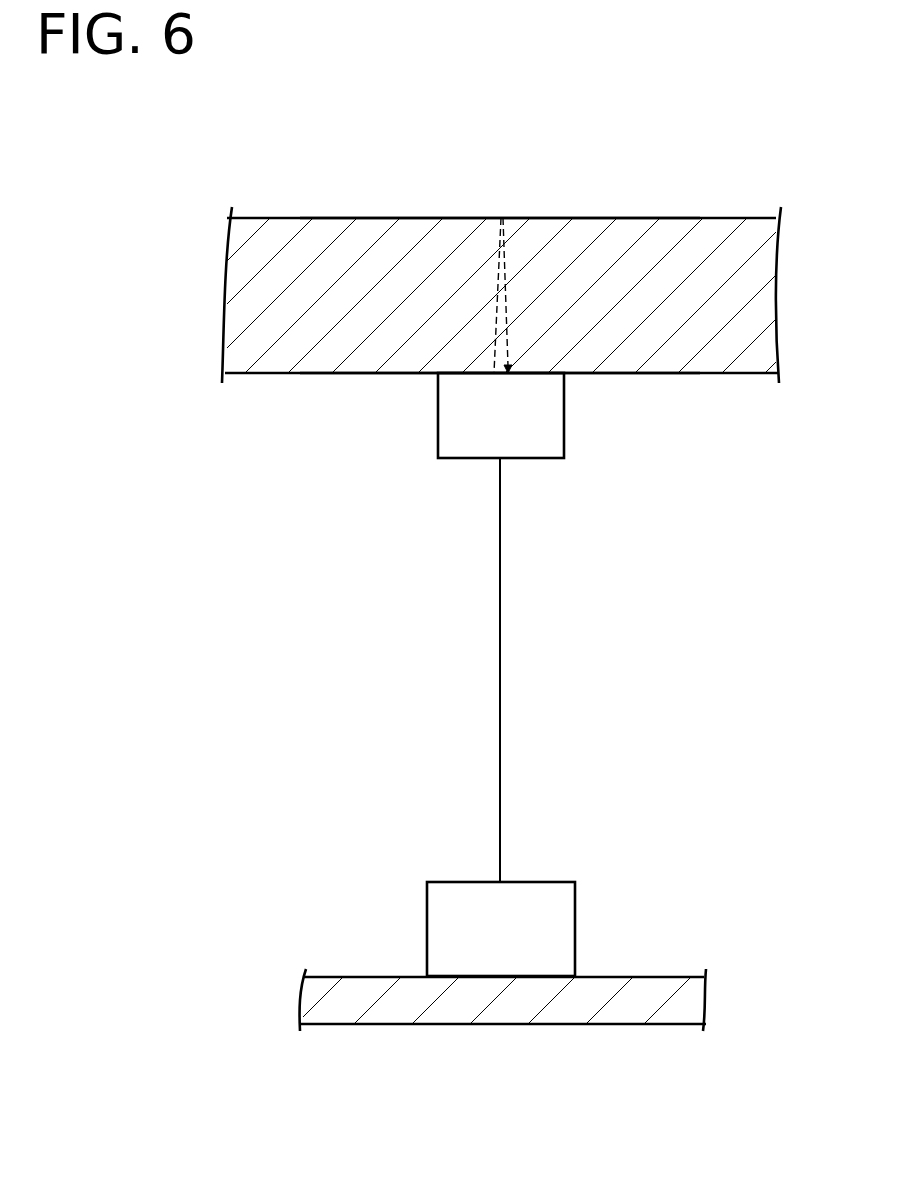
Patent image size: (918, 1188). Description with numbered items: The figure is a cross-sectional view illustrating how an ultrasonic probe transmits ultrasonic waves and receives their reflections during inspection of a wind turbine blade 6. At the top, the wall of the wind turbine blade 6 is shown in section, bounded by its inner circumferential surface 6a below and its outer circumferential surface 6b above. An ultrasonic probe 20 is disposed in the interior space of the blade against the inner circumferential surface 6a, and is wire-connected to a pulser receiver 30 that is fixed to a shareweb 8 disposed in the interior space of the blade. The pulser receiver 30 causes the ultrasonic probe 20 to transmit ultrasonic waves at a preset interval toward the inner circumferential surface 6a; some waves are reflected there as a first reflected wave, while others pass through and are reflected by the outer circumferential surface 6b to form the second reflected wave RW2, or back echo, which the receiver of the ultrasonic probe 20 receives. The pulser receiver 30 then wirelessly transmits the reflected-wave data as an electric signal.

The wind turbine blade 6 is at (330, 232).
The inner circumferential surface 6a is at (313, 374).
The outer circumferential surface 6b is at (434, 217).
The second reflected wave RW2 is at (508, 297).
The ultrasonic probe 20 is at (565, 417).
The pulser receiver 30 is at (576, 930).
The shareweb 8 is at (360, 985).